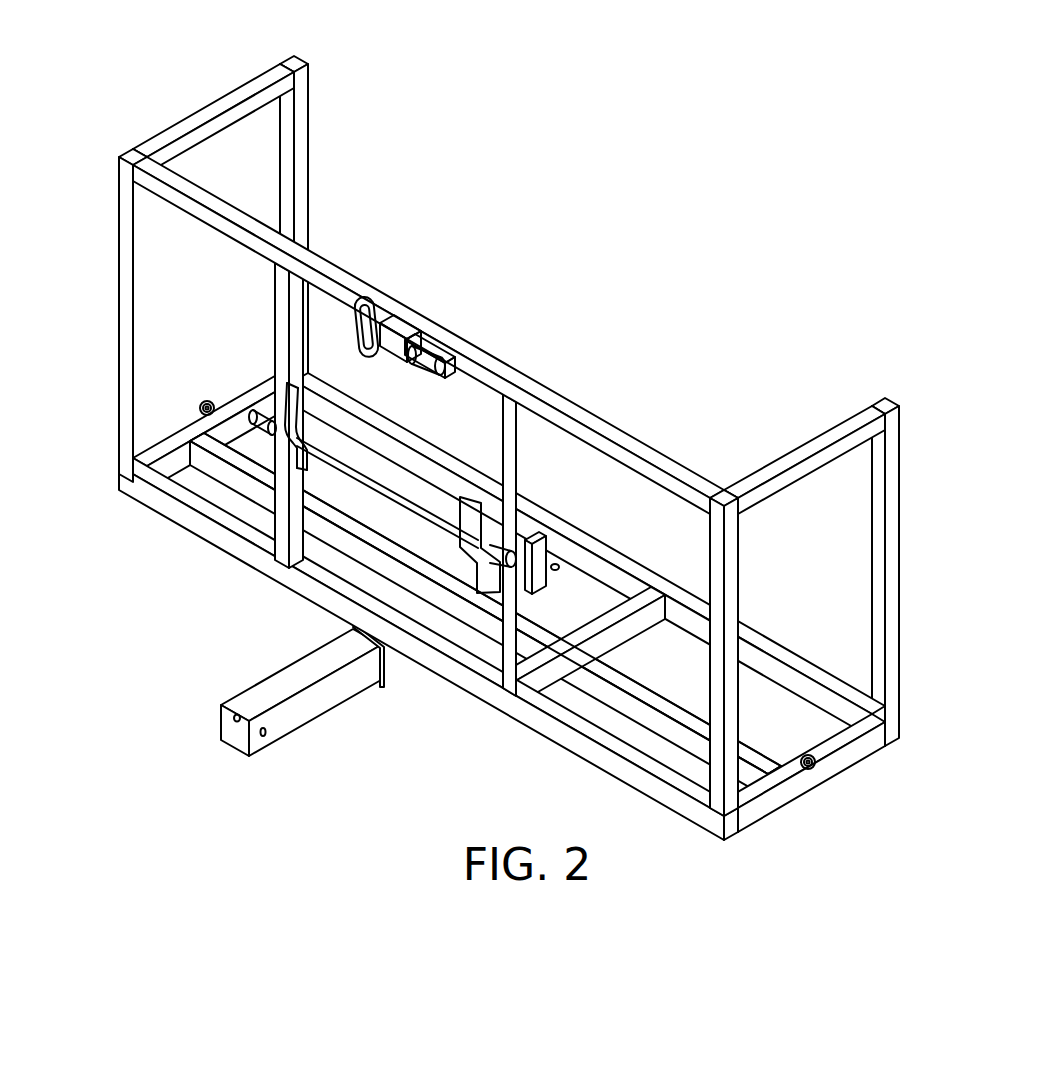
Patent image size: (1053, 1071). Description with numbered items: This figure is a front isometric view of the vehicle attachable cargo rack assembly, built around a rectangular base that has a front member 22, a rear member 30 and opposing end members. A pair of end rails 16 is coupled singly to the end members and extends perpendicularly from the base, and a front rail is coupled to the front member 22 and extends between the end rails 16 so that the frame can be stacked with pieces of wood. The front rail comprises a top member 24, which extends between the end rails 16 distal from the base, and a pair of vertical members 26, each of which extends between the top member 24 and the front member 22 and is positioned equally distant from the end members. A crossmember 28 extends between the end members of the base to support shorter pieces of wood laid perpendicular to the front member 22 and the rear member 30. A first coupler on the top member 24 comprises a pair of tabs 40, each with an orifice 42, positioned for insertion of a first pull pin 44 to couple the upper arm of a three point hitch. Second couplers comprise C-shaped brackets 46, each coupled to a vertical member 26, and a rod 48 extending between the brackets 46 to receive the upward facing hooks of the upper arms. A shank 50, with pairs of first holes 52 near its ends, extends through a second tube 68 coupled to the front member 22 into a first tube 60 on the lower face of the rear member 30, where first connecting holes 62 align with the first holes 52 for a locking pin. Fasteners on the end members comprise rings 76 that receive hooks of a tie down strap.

The end rail 16 is at (305, 140).
The front member 22 is at (566, 742).
The top member 24 is at (567, 404).
The vertical member 26 is at (398, 577).
The crossmember 28 is at (652, 697).
The rear member 30 is at (812, 672).
The tab 40 is at (411, 337).
The orifice 42 is at (447, 353).
The first pull pin 44 is at (384, 333).
The bracket 46 is at (283, 428).
The rod 48 is at (432, 462).
The shank 50 is at (320, 705).
The first hole 52 is at (237, 722).
The first tube 60 is at (550, 583).
The first connecting hole 62 is at (558, 563).
The second tube 68 is at (384, 663).
The ring 76 is at (205, 405).